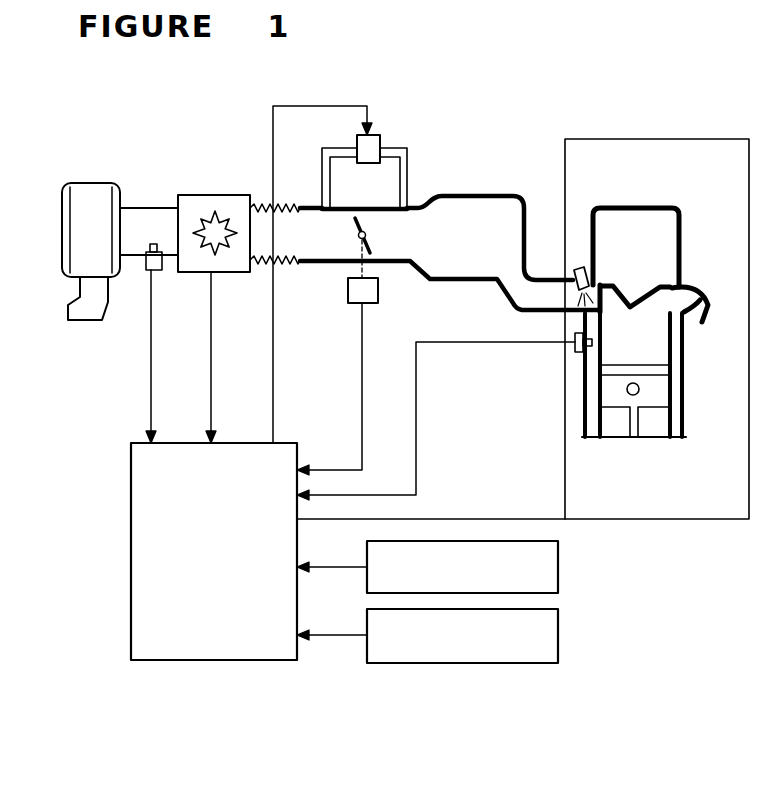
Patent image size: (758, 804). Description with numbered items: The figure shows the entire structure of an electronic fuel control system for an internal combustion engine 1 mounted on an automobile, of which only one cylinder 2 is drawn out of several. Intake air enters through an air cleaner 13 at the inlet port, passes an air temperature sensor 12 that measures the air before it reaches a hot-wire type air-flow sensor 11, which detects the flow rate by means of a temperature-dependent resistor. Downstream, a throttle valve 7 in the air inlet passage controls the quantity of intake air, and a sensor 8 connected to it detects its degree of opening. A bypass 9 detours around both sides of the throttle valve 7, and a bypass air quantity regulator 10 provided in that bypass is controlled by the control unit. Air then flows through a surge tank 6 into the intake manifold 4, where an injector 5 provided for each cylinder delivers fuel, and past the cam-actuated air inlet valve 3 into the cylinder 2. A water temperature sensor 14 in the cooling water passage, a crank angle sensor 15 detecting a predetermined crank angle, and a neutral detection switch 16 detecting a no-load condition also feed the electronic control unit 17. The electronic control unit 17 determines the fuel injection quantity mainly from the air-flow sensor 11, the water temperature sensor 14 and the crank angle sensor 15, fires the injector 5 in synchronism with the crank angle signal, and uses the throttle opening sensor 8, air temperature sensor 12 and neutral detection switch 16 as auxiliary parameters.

The internal combustion engine 1 is at (614, 198).
The cylinder 2 is at (640, 348).
The air inlet valve 3 is at (600, 277).
The intake manifold 4 is at (540, 297).
The injector 5 is at (573, 270).
The surge tank 6 is at (478, 230).
The throttle valve 7 is at (372, 243).
The throttle opening degree sensor 8 is at (348, 292).
The bypass 9 is at (408, 172).
The bypass air quantity regulator 10 is at (375, 142).
The hot-wire type air-flow sensor 11 is at (220, 203).
The air temperature sensor 12 is at (142, 262).
The air cleaner 13 is at (90, 198).
The water temperature sensor 14 is at (575, 348).
The crank angle sensor 15 is at (542, 572).
The neutral detection switch 16 is at (542, 637).
The electronic control unit 17 is at (237, 633).